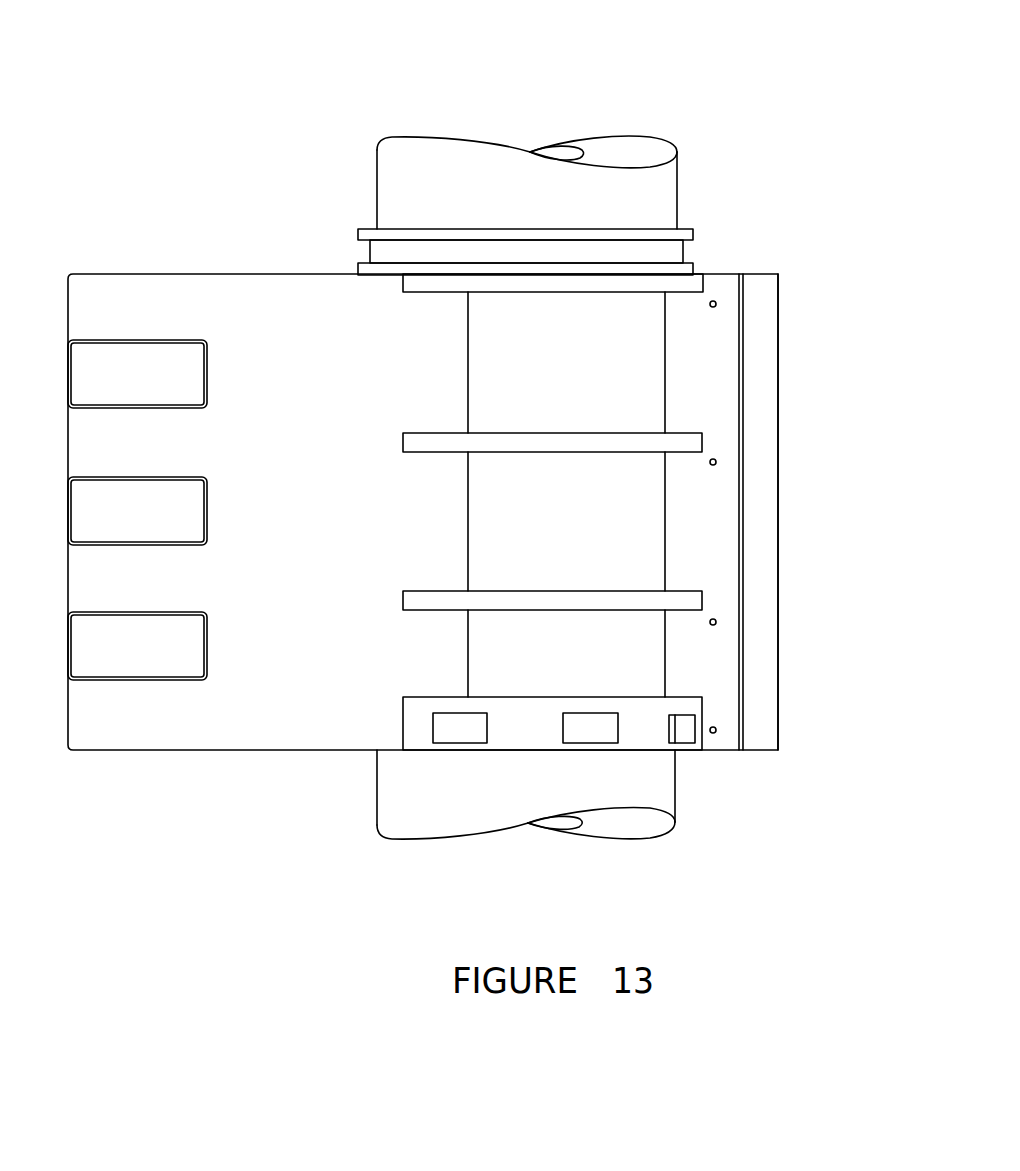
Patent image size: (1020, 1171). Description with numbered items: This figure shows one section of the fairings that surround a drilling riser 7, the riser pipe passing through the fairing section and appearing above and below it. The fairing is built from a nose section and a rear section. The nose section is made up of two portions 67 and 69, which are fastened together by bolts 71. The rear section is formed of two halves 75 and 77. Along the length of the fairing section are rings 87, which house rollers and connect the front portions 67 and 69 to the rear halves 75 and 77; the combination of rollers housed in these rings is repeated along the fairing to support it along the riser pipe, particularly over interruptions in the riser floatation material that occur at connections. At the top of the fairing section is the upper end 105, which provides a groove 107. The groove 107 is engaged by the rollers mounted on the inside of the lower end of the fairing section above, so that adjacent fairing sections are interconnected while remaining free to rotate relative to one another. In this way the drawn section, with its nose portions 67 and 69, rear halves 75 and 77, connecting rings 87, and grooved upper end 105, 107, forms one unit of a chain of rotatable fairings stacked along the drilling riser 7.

The drilling riser 7 is at (520, 365).
The nose section portion 67 is at (762, 340).
The nose section portion 69 is at (720, 393).
The bolts 71 is at (718, 729).
The rear section half 75 is at (120, 355).
The rear section half 77 is at (217, 300).
The ring 87 is at (703, 440).
The upper end 105 is at (692, 223).
The groove 107 is at (697, 245).